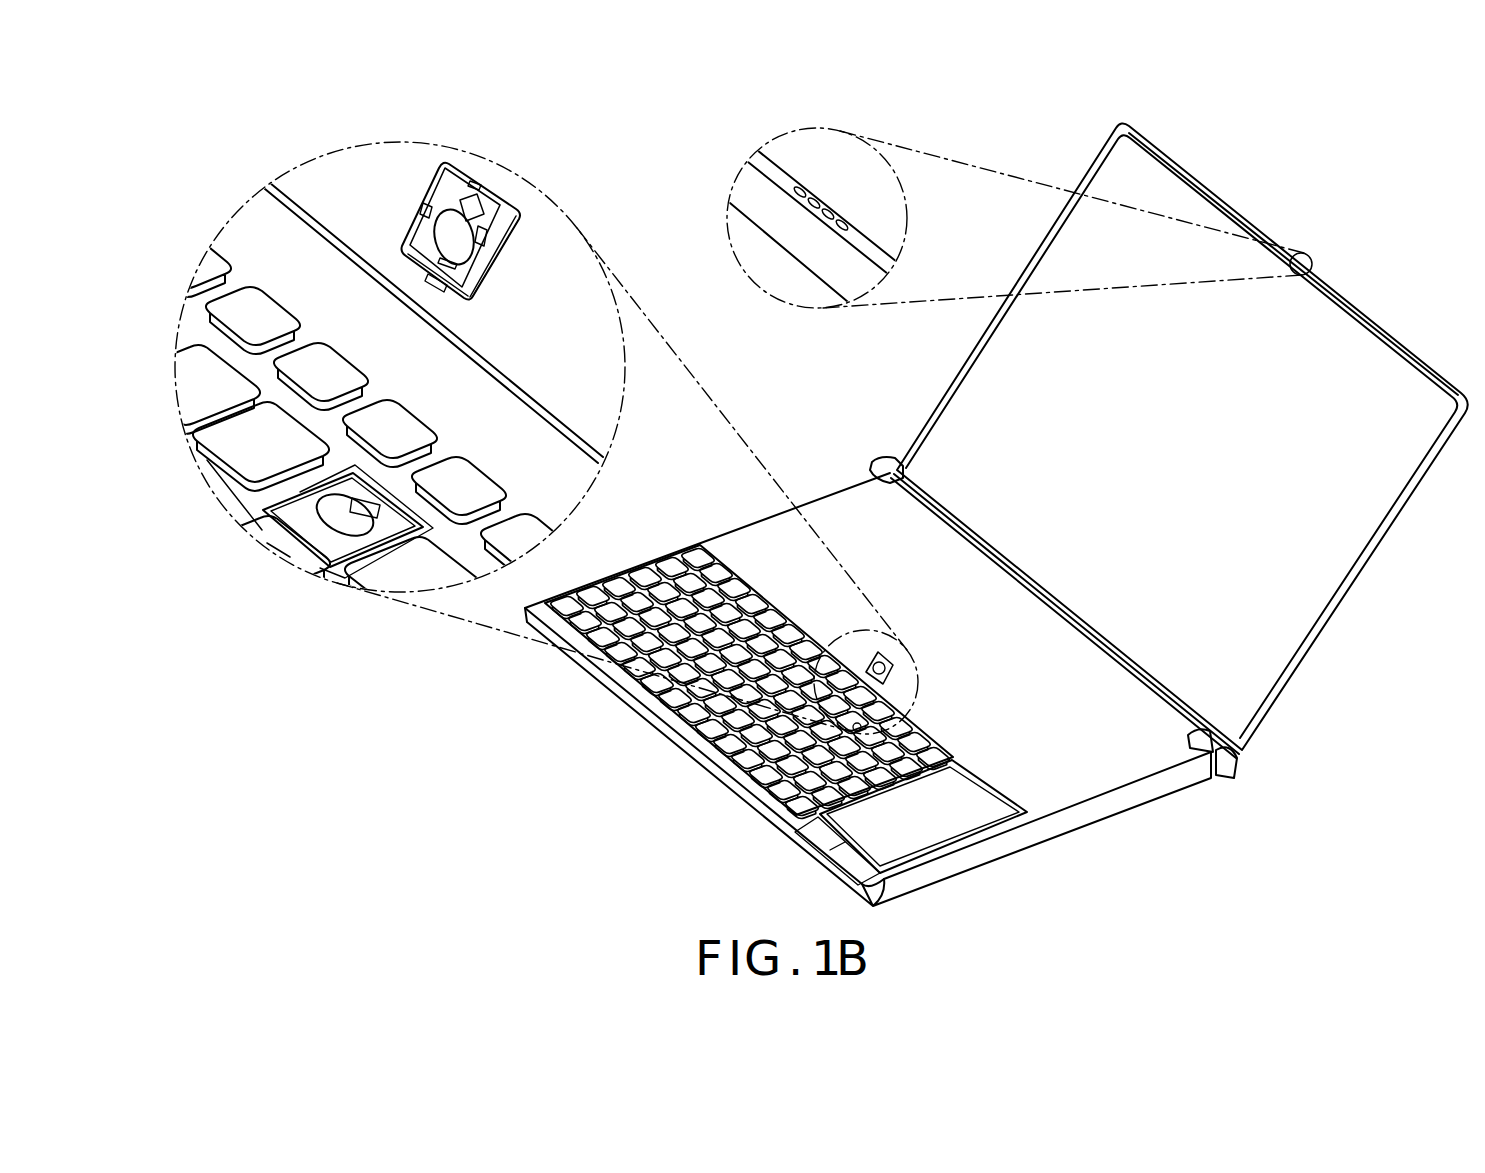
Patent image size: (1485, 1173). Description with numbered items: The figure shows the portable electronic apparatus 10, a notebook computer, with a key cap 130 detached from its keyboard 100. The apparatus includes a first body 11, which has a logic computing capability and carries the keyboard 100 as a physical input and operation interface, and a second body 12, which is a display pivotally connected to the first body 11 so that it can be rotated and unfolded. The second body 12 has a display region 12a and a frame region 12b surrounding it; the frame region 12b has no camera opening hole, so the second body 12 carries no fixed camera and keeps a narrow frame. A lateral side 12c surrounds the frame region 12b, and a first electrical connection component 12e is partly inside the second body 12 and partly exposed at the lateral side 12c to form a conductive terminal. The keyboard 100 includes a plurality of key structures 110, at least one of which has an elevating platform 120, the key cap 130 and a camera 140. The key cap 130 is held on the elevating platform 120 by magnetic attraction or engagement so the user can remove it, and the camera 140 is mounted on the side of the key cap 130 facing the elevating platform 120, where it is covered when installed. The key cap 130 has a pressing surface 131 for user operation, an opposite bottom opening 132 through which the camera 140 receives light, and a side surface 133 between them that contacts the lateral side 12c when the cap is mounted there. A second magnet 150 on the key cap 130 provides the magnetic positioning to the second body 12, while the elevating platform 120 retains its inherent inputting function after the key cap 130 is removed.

The portable electronic apparatus 10 is at (902, 489).
The first body 11 is at (1125, 805).
The second body 12 is at (1320, 642).
The display region 12a is at (1151, 167).
The frame region 12b is at (745, 190).
The lateral side 12c is at (750, 163).
The first electrical connection component 12e is at (828, 203).
The keyboard 100 is at (245, 228).
The key structure 110 is at (385, 350).
The elevating platform 120 is at (300, 503).
The key cap 130 is at (447, 222).
The pressing surface 131 is at (513, 272).
The bottom opening 132 is at (478, 215).
The side surface 133 is at (521, 240).
The camera 140 is at (450, 193).
The second magnet 150 is at (410, 252).